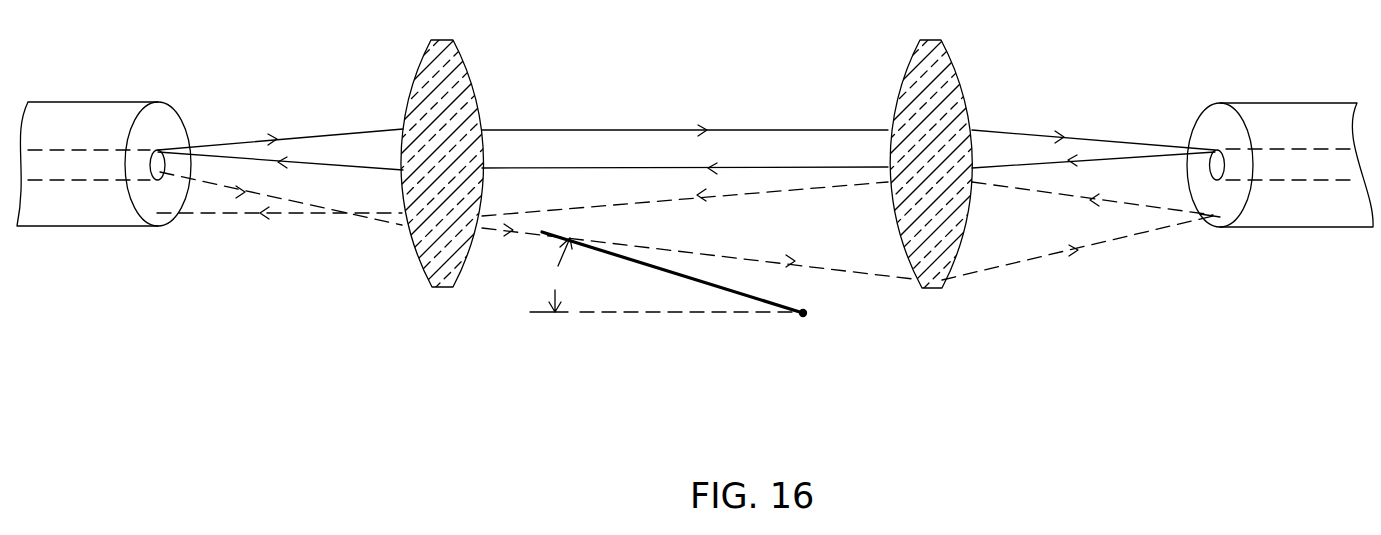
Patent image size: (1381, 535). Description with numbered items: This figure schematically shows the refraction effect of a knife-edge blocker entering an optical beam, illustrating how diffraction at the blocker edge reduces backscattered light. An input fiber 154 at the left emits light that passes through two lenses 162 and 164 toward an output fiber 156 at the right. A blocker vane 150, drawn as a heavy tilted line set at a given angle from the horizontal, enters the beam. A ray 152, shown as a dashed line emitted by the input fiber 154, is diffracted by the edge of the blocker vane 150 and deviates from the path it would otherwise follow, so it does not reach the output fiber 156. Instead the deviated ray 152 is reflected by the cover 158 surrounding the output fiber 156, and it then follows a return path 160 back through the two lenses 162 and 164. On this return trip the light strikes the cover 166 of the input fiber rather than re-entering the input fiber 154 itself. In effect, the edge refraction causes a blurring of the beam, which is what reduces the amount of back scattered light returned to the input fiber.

The blocker vane 150 is at (700, 280).
The ray 152 is at (262, 201).
The input fiber 154 is at (158, 150).
The output fiber 156 is at (1220, 150).
The cover 158 is at (1230, 202).
The path 160 is at (790, 193).
The lens 162 is at (957, 79).
The lens 164 is at (473, 93).
The cover 166 is at (160, 197).